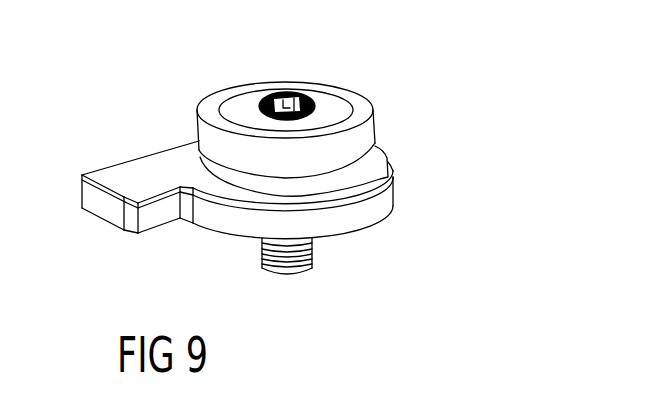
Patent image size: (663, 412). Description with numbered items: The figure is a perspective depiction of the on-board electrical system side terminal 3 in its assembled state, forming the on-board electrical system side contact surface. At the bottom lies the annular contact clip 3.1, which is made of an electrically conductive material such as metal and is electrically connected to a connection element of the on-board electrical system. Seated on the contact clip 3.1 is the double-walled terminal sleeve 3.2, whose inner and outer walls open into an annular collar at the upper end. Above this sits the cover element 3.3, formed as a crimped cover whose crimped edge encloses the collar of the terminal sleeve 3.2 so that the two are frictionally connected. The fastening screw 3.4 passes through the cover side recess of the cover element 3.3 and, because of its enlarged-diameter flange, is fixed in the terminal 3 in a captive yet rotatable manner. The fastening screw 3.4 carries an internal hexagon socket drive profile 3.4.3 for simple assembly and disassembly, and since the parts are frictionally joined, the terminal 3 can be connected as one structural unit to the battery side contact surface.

The on-board electrical system side terminal 3 is at (287, 158).
The contact clip 3.1 is at (386, 204).
The terminal sleeve 3.2 is at (373, 167).
The cover element 3.3 is at (372, 118).
The fastening screw 3.4 is at (313, 254).
The internal hexagon socket drive profile 3.4.3 is at (293, 103).